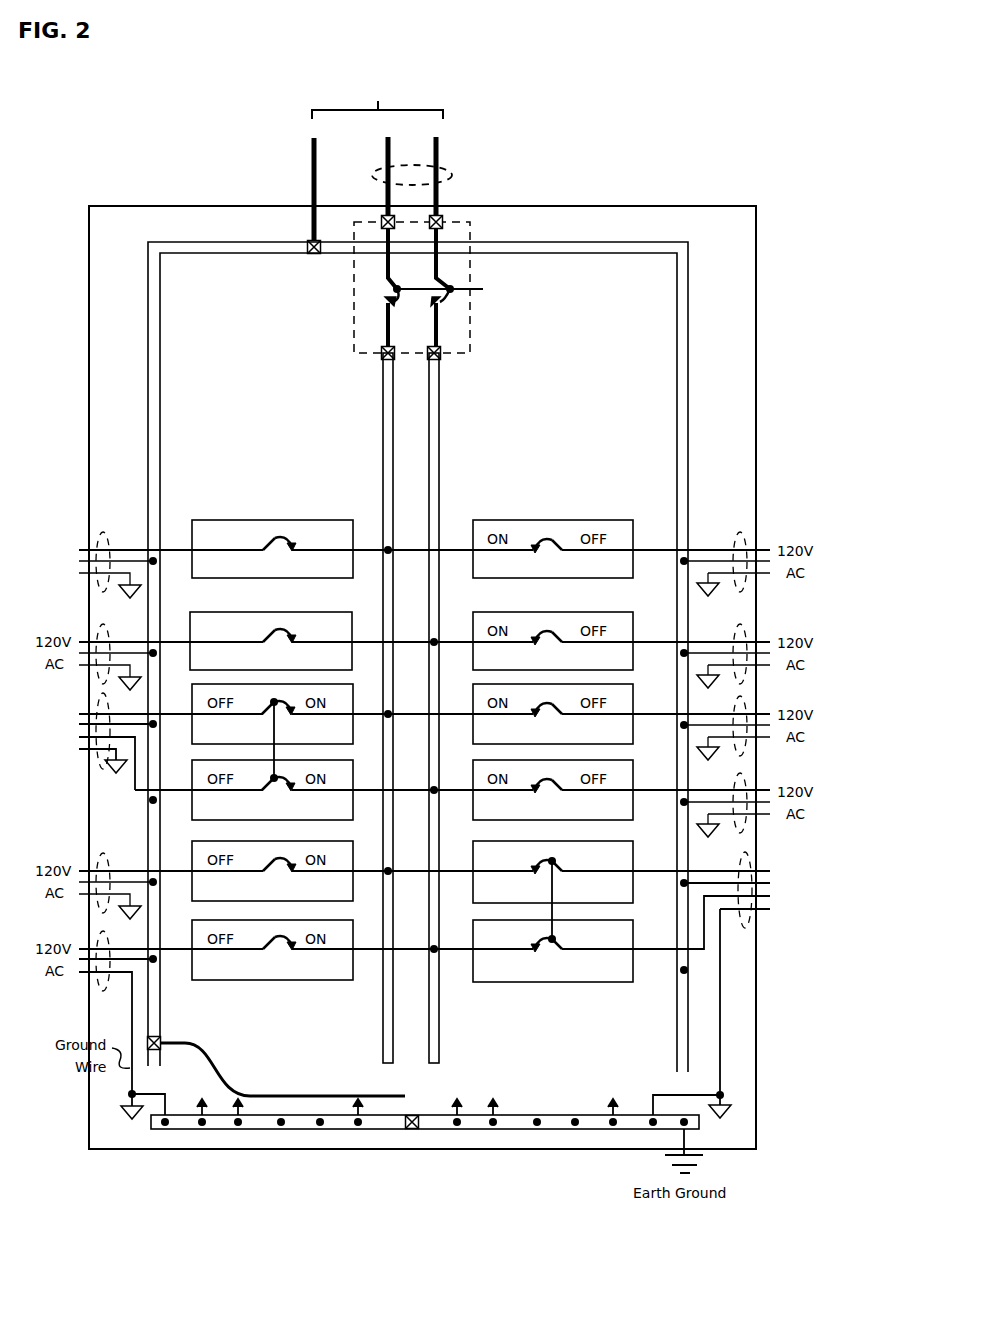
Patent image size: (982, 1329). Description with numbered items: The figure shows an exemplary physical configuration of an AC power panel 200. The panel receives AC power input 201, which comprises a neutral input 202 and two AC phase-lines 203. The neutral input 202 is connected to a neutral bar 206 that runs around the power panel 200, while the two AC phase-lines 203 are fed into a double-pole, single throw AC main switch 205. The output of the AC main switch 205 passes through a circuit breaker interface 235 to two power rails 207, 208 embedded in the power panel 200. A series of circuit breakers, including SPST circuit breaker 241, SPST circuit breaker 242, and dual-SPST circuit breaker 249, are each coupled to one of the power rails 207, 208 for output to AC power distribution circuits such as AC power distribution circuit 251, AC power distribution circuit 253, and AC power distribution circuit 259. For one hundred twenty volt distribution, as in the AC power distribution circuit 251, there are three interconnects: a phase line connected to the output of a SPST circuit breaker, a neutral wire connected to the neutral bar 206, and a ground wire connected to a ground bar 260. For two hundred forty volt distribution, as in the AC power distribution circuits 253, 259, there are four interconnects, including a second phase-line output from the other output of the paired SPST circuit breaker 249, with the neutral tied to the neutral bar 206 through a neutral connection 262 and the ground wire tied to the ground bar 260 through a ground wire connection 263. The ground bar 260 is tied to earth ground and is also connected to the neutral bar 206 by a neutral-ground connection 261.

The power panel 200 is at (667, 181).
The AC power input 201 is at (383, 95).
The neutral input 202 is at (312, 181).
The AC phase lines 203 is at (452, 176).
The AC main switch 205 is at (458, 285).
The neutral bar 206 is at (160, 280).
The power rail 207 is at (383, 450).
The power rail 208 is at (440, 455).
The circuit breaker interface 235 is at (381, 357).
The circuit breaker 241 is at (272, 504).
The SPST circuit breaker 242 is at (277, 630).
The paired SPST circuit breaker 249 is at (567, 985).
The AC power distribution circuit 251 is at (107, 546).
The AC power distribution circuit 253 is at (104, 752).
The AC power distribution circuit 259 is at (756, 993).
The ground bar 260 is at (340, 1130).
The neutral-ground connection 261 is at (214, 1062).
The neutral connection 262 is at (712, 882).
The ground wire connection 263 is at (742, 918).